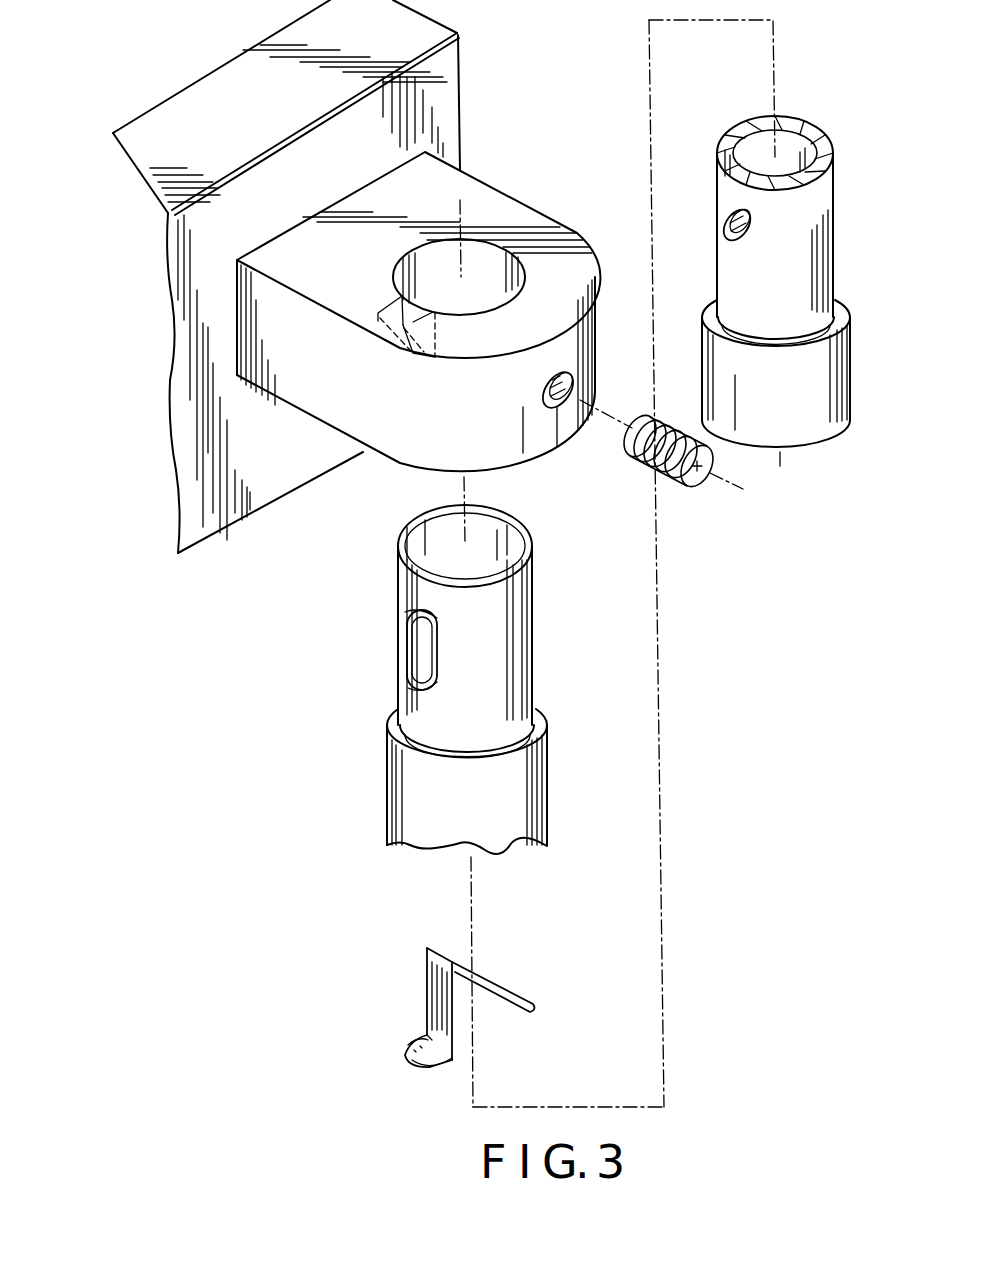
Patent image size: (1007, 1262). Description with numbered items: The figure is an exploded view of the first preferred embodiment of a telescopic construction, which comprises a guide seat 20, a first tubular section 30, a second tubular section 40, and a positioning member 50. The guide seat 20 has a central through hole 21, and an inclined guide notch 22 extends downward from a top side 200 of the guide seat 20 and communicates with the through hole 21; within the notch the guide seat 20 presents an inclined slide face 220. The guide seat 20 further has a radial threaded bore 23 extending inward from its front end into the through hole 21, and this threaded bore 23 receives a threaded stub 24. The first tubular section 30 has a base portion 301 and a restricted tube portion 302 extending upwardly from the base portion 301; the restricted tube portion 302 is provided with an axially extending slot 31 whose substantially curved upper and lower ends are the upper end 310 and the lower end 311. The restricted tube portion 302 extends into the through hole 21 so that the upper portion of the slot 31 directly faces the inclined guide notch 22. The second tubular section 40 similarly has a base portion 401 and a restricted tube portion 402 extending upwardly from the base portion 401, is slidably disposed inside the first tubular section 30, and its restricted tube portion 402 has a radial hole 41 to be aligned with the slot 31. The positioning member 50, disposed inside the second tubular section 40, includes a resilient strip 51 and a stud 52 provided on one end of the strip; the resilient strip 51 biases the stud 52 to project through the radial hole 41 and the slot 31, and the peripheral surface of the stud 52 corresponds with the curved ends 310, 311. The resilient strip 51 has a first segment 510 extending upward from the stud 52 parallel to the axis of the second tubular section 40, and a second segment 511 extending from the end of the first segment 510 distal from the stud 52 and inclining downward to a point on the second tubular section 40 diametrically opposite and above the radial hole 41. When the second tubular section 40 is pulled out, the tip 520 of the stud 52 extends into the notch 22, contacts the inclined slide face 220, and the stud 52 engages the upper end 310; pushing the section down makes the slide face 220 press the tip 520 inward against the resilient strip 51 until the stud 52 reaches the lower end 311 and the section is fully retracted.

The guide seat 20 is at (437, 310).
The central through hole 21 is at (478, 262).
The inclined guide notch 22 is at (390, 310).
The inclined slide face 220 is at (413, 357).
The top side 200 is at (574, 236).
The radial threaded bore 23 is at (568, 394).
The threaded stub 24 is at (640, 455).
The first tubular section 30 is at (475, 679).
The restricted tube portion 302 is at (505, 603).
The upper end 310 is at (408, 615).
The axially extending slot 31 is at (425, 650).
The lower end 311 is at (410, 689).
The base portion 301 is at (517, 783).
The second tubular section 40 is at (786, 292).
The radial hole 41 is at (733, 237).
The restricted tube portion 402 is at (805, 280).
The base portion 401 is at (800, 437).
The positioning member 50 is at (455, 1014).
The resilient strip 51 is at (425, 960).
The second segment 511 is at (492, 981).
The tip 520 is at (406, 1055).
The stud 52 is at (425, 1057).
The first segment 510 is at (455, 1058).